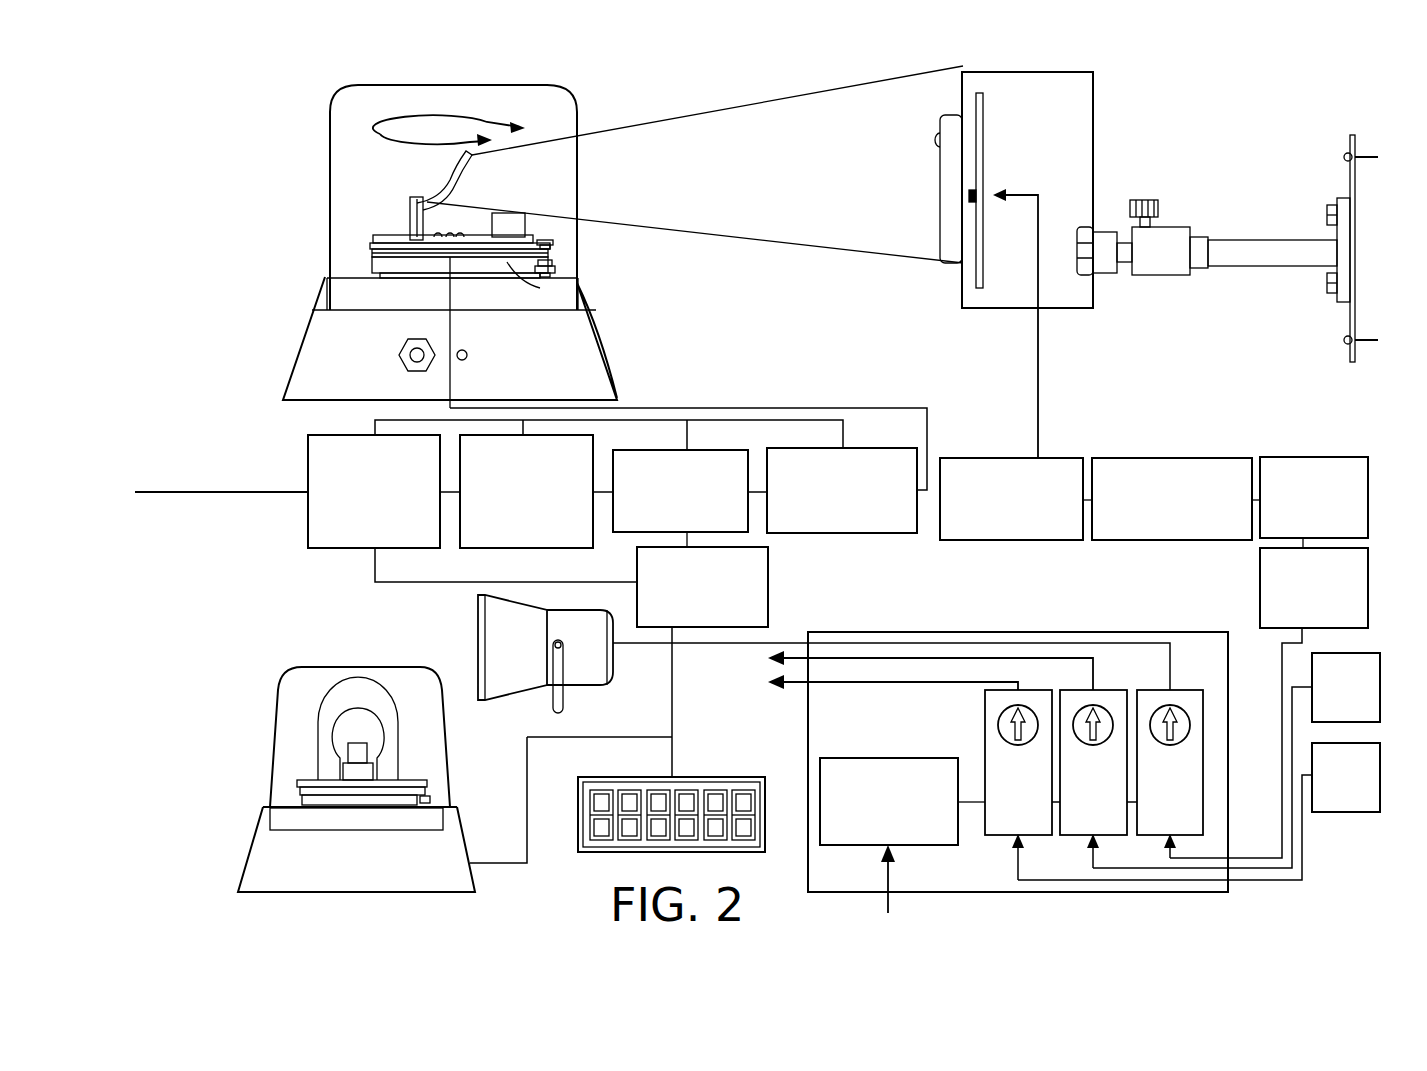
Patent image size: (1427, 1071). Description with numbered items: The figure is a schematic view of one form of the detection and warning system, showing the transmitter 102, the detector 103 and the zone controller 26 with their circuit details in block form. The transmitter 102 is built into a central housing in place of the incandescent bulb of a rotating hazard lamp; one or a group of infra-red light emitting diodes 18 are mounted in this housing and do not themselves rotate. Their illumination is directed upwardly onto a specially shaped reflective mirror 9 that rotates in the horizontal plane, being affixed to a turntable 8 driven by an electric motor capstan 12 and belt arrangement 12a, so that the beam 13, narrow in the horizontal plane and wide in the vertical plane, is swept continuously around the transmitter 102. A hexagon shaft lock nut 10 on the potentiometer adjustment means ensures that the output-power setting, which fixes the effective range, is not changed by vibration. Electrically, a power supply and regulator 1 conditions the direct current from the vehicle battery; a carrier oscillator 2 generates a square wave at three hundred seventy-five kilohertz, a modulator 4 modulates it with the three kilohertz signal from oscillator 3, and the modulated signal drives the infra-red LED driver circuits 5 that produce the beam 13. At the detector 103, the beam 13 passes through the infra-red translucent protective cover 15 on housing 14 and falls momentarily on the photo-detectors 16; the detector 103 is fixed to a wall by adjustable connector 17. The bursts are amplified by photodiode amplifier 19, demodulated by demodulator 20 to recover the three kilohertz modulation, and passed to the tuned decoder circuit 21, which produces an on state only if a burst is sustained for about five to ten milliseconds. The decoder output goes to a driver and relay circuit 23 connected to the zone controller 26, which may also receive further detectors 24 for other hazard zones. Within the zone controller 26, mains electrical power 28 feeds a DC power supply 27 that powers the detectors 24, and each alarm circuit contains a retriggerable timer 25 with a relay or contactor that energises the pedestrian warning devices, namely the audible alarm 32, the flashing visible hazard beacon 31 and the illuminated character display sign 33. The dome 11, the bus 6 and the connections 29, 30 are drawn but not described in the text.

The power supply and regulator 1 is at (308, 515).
The carrier oscillator 2 is at (470, 550).
The oscillator 3 is at (770, 572).
The modulator 4 is at (713, 450).
The infra-red LED driver circuits 5 is at (875, 533).
The transmitter circuit interconnection 6 is at (863, 407).
The turntable 8 is at (372, 266).
The reflective mirror 9 is at (470, 155).
The hexagon shaft lock nut 10 is at (402, 350).
The transmitter housing dome 11 is at (562, 100).
The electric motor capstan 12 is at (550, 247).
The belt arrangement 12a is at (540, 288).
The beam 13 is at (656, 121).
The housing 14 is at (953, 305).
The infra-red translucent protective cover 15 is at (940, 245).
The photo-detectors 16 is at (969, 197).
The adjustable connector 17 is at (1178, 200).
The infra-red Light Emitting Diodes 18 is at (440, 237).
The photodiode amplifier 19 is at (1057, 458).
The demodulator 20 is at (1163, 458).
The tuned decoder circuit 21 is at (1273, 457).
The driver and relay circuit 23 is at (1260, 597).
The detectors 24 is at (1357, 652).
The timer 25 is at (1203, 807).
The zone controller 26 is at (1230, 735).
The DC power supply 27 is at (857, 758).
The mains electrical power 28 is at (890, 880).
The control signal outputs 29 is at (805, 685).
The power connection 30 is at (975, 802).
The flashing visible hazard beacon 31 is at (447, 765).
The audible alarm 32 is at (587, 687).
The illuminated character display sign 33 is at (732, 777).
The transmitter 102 is at (258, 205).
The detector 103 is at (1006, 320).